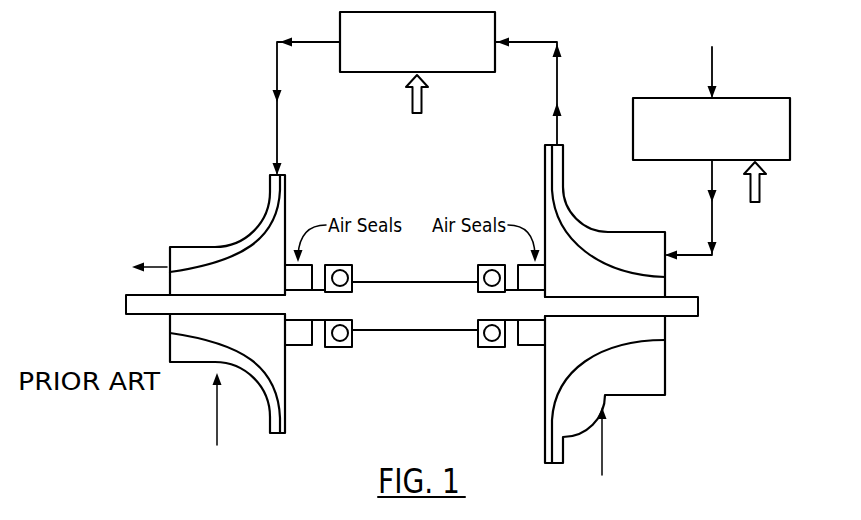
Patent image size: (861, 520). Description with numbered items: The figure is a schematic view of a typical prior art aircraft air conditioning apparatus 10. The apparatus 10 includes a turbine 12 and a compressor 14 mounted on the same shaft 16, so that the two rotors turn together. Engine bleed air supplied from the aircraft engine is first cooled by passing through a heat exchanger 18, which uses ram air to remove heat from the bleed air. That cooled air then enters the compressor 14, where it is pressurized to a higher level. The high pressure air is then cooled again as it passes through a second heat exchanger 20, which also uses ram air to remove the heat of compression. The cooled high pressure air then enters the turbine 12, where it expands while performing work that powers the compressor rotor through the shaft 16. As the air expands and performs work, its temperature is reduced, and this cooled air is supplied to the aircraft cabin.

The air conditioning apparatus 10 is at (200, 146).
The turbine 12 is at (203, 253).
The compressor 14 is at (625, 378).
The shaft 16 is at (412, 322).
The heat exchanger 18 is at (672, 98).
The second heat exchanger 20 is at (460, 72).